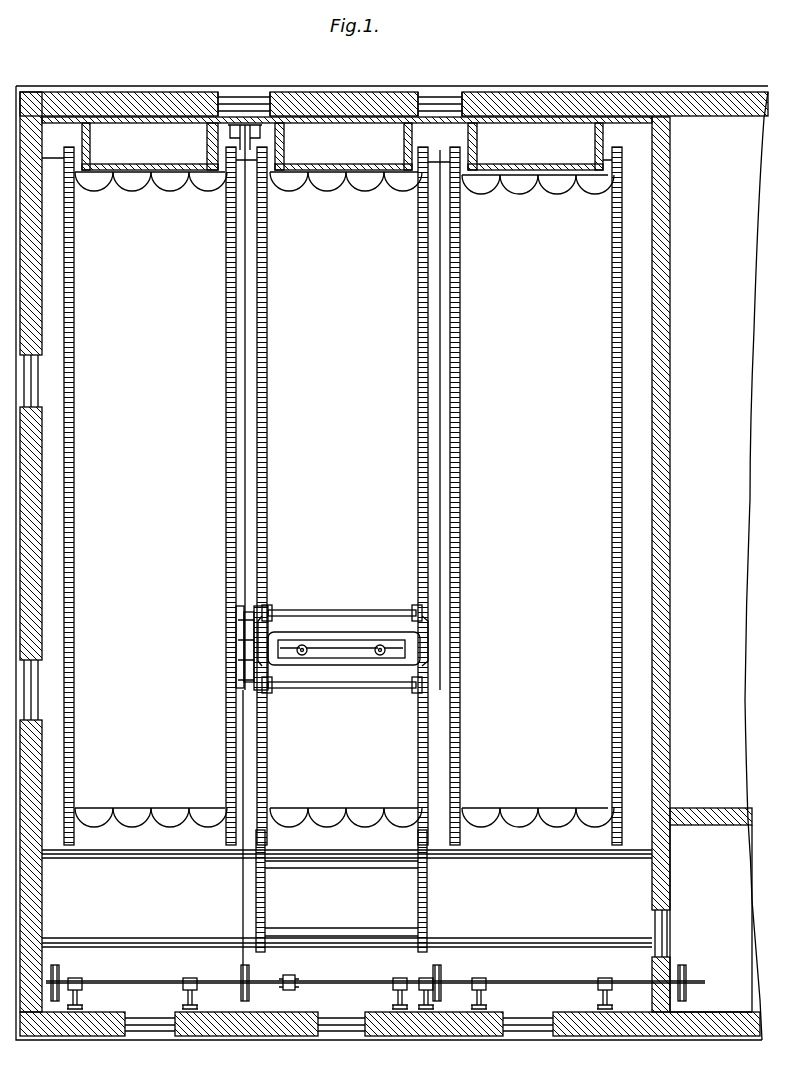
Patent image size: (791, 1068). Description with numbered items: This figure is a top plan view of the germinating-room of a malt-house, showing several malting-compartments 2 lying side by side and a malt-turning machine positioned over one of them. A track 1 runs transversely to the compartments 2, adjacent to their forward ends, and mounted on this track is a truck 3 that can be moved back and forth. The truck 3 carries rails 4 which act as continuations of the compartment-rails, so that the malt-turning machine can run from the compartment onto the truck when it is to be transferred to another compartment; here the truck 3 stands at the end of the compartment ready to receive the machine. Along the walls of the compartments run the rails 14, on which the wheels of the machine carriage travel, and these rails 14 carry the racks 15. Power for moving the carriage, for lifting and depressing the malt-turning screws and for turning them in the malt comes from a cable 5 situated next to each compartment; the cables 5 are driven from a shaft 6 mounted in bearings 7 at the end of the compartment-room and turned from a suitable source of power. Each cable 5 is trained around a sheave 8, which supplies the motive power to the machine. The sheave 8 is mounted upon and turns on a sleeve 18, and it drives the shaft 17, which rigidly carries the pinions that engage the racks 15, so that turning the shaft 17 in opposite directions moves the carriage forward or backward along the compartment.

The track 1 is at (104, 938).
The malting-compartment 2 is at (344, 499).
The truck 3 is at (334, 928).
The rails 4 is at (266, 902).
The cable 5 is at (243, 902).
The shaft 6 is at (118, 984).
The bearings 7 is at (188, 986).
The sheave 8 is at (242, 678).
The rails 14 is at (266, 442).
The racks 15 is at (460, 528).
The shaft 17 is at (340, 616).
The sleeve 18 is at (302, 656).